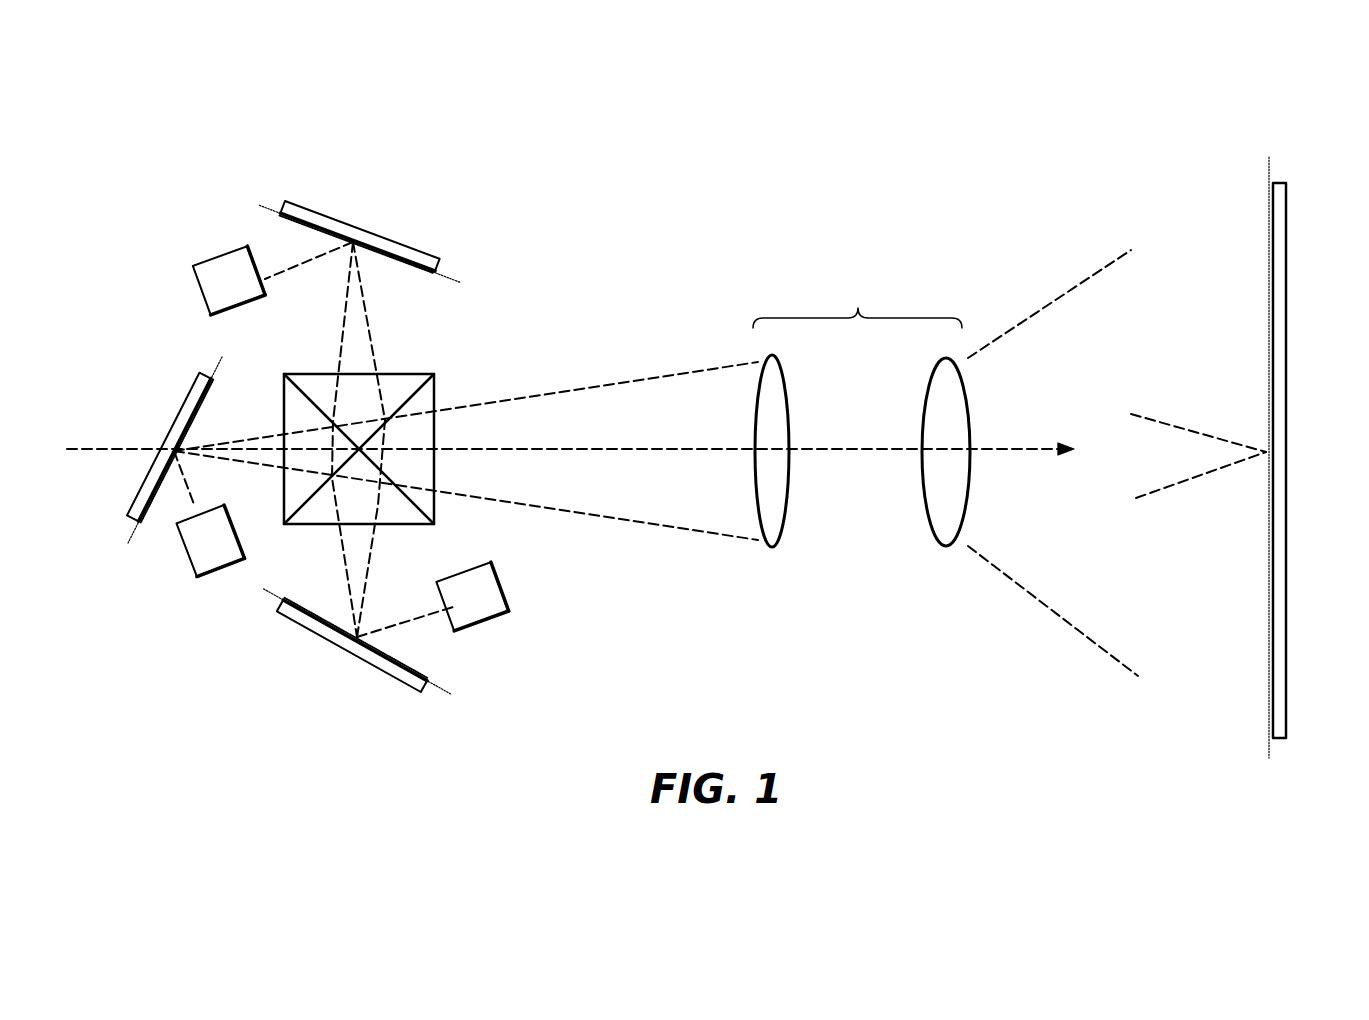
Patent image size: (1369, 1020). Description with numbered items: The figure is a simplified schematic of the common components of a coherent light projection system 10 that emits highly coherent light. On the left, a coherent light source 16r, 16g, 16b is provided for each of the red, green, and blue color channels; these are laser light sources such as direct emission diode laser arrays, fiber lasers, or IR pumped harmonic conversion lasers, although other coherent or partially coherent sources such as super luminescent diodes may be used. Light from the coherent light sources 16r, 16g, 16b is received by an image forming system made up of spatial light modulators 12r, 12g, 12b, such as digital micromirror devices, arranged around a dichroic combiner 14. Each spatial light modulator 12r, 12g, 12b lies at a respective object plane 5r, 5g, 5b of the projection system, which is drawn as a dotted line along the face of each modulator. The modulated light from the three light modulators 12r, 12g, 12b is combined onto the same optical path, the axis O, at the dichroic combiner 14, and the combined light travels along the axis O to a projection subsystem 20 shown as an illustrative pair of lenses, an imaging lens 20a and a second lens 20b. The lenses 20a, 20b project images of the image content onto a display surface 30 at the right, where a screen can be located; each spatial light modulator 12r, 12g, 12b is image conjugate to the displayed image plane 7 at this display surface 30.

The coherent light projection system 10 is at (147, 123).
The optical axis O is at (129, 448).
The dichroic combiner 14 is at (408, 374).
The spatial light modulator 12r is at (310, 207).
The object plane 5r is at (457, 283).
The coherent light source 16r is at (208, 262).
The spatial light modulator 12g is at (132, 520).
The object plane 5g is at (217, 363).
The coherent light source 16g is at (190, 560).
The spatial light modulator 12b is at (330, 642).
The object plane 5b is at (443, 692).
The coherent light source 16b is at (502, 590).
The projection subsystem 20 is at (841, 440).
The imaging lens 20a is at (771, 549).
The lens 20b is at (943, 548).
The displayed image plane 7 is at (1267, 174).
The display surface 30 is at (1287, 520).